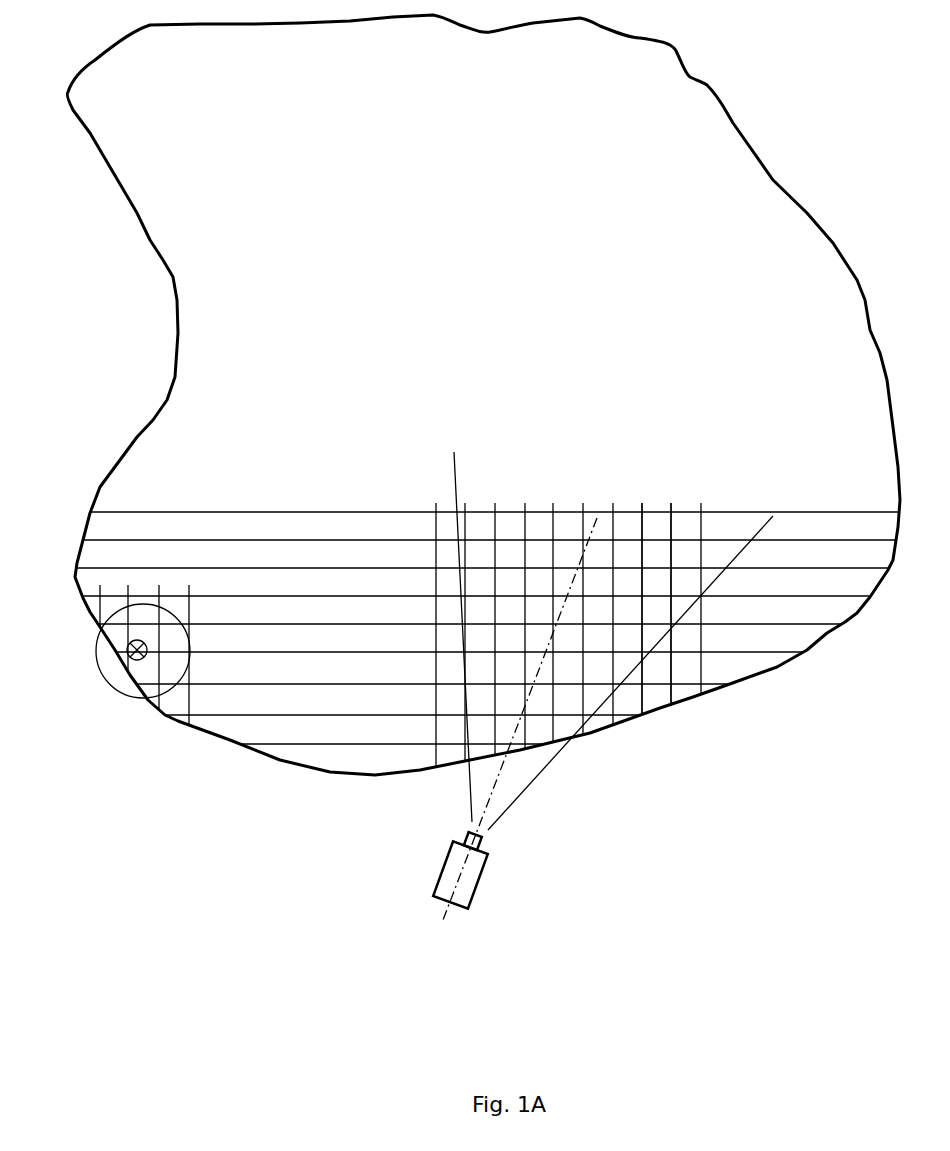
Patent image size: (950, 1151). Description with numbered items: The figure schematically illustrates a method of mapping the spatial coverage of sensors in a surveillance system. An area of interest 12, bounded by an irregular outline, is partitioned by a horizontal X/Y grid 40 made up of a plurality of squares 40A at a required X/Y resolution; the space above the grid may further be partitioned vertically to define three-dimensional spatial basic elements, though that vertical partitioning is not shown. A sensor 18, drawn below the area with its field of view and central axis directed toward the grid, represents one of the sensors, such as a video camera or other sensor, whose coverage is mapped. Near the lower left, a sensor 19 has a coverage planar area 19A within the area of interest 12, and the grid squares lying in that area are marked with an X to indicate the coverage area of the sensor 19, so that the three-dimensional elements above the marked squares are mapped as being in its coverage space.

The area of interest 12 is at (383, 432).
The horizontal X/Y grid 40 is at (568, 433).
The squares 40A is at (662, 587).
The coverage planar area 19A is at (105, 632).
The sensor 19 is at (130, 663).
The sensor 18 is at (492, 883).